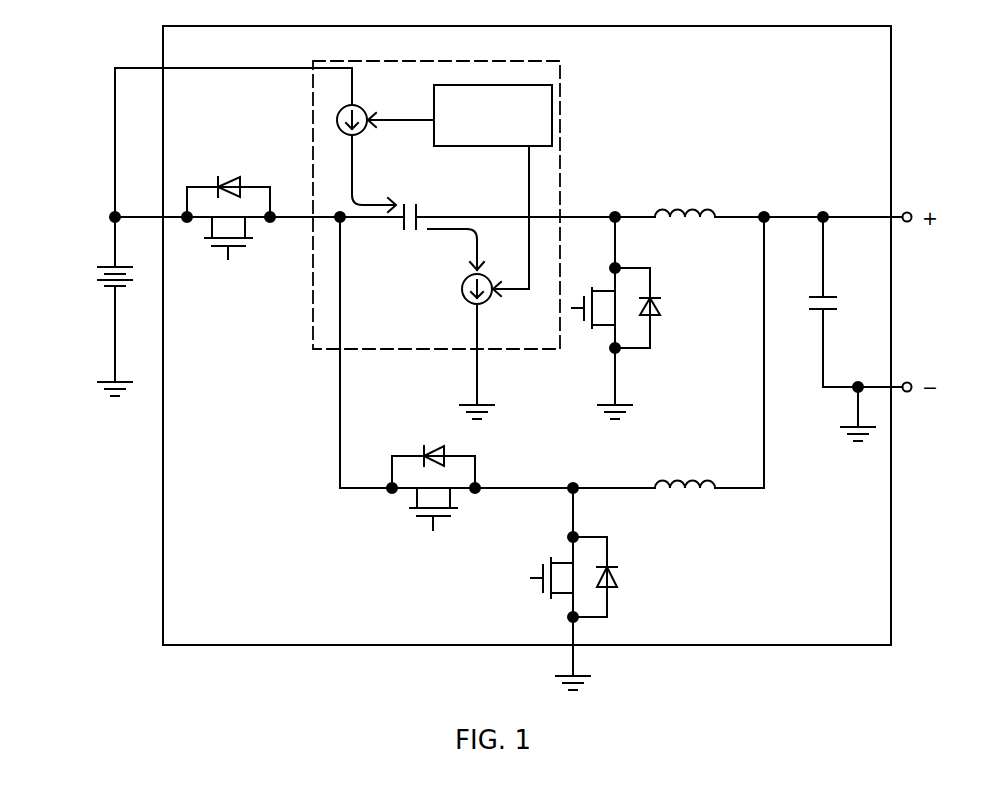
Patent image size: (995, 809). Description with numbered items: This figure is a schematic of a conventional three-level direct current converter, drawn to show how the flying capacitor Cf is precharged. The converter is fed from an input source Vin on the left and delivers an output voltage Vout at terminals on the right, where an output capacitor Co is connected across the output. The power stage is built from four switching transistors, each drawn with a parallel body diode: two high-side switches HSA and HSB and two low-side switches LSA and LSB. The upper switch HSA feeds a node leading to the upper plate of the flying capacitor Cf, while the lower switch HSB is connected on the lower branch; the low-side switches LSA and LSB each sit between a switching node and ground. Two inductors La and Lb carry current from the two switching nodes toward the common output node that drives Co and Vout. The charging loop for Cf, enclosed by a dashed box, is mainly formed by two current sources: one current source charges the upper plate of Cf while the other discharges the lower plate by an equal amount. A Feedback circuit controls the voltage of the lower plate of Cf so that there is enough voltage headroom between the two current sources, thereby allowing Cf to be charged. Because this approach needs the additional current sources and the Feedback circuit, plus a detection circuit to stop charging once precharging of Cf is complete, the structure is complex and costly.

The input voltage source Vin is at (90, 304).
The high-side switch A HSA is at (228, 236).
The high-side switch B HSB is at (433, 503).
The low-side switch A LSA is at (640, 315).
The low-side switch B LSB is at (549, 586).
The inductor A La is at (685, 198).
The inductor B Lb is at (685, 469).
The flying capacitor Cf is at (414, 232).
The output capacitor Co is at (861, 326).
The output voltage Vout is at (933, 305).
The feedback circuit Feedback is at (493, 115).